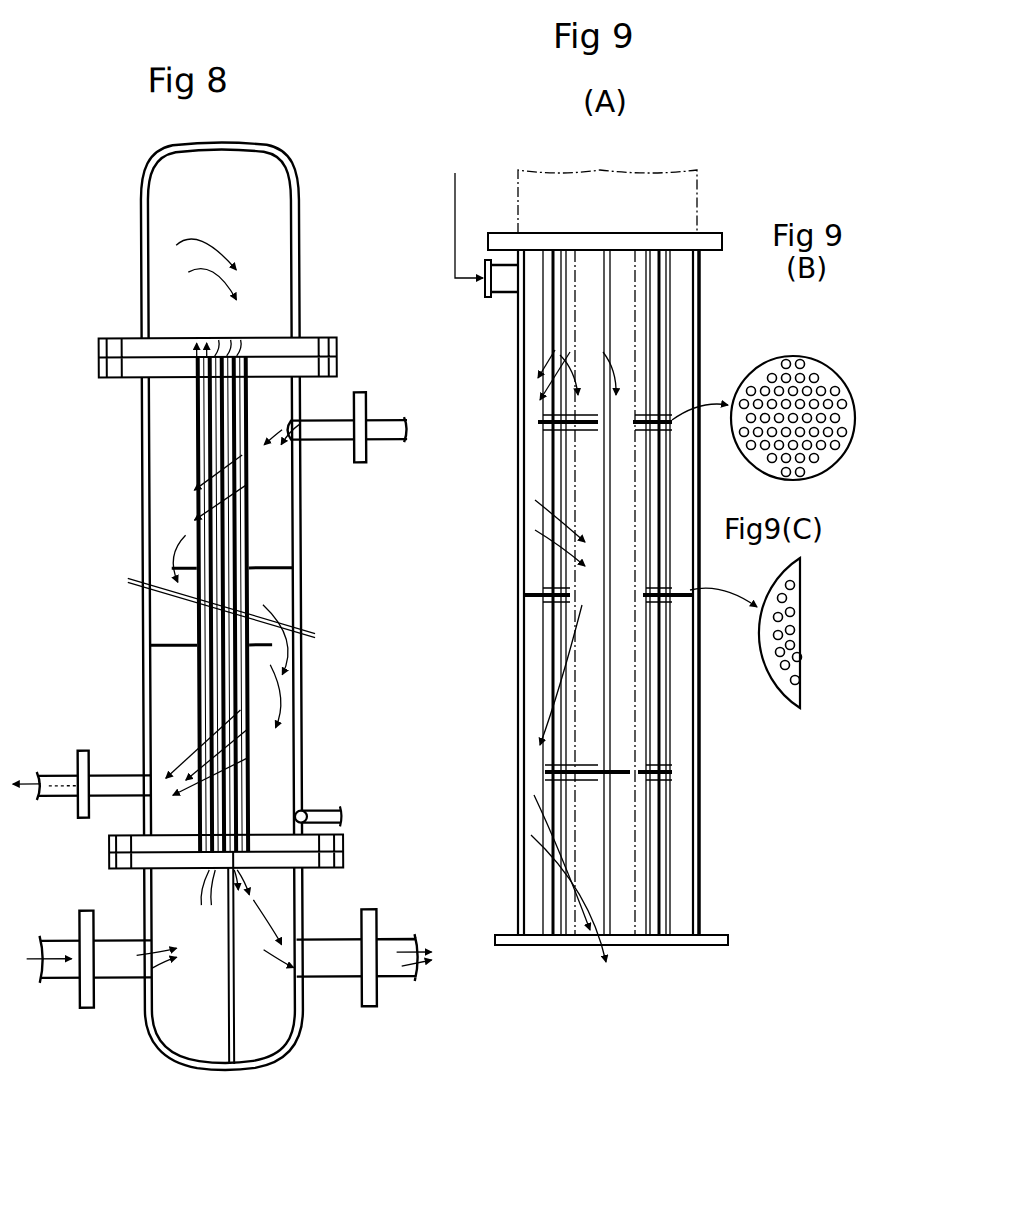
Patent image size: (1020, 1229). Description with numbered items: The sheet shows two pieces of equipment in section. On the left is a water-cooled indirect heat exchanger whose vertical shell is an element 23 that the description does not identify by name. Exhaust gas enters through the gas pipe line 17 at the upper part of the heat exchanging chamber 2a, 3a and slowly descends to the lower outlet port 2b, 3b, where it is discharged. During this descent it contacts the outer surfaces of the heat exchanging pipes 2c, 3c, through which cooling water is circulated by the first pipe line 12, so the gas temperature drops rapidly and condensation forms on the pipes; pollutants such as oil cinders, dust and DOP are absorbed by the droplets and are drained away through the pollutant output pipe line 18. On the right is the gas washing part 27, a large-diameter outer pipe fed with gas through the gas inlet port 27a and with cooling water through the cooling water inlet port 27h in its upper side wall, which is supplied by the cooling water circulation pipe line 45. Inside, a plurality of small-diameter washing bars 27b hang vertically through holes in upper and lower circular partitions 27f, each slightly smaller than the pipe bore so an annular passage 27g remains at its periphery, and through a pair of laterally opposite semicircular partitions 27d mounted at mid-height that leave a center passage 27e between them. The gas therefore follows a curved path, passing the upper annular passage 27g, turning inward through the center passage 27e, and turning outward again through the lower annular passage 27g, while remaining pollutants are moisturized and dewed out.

In FIG. 8, the shell of heat exchanger 23 is at (297, 278).
In FIG. 8, the gas pipe line 17 is at (510, 428).
In FIG. 8, the heat exchanging chamber 2a is at (276, 533).
In FIG. 8, the heat exchanging chamber 3a is at (309, 604).
In FIG. 8, the heat exchanging pipes 2c is at (243, 555).
In FIG. 8, the heat exchanging pipes 3c is at (338, 559).
In FIG. 8, the lower outlet port 2b is at (56, 775).
In FIG. 8, the lower outlet port 3b is at (94, 734).
In FIG. 8, the pollutant output pipe line 18 is at (330, 812).
In FIG. 8, the first pipe line 12 is at (58, 982).
In FIG. 9A, the cooling water circulation pipe line 45 is at (456, 200).
In FIG. 9A, the gas washing part 27 is at (714, 228).
In FIG. 9A, the gas inlet port 27a is at (683, 170).
In FIG. 9A, the small-diameter washing bars 27b is at (663, 350).
In FIG. 9B, the small-diameter washing bars 27b is at (836, 386).
In FIG. 9C, the small-diameter washing bars 27b is at (800, 680).
In FIG. 9A, the semicircular partitions 27d is at (533, 599).
In FIG. 9C, the semicircular partitions 27d is at (778, 692).
In FIG. 9A, the center passage 27e is at (589, 599).
In FIG. 9A, the circular partitions 27f is at (545, 774).
In FIG. 9B, the circular partitions 27f is at (784, 355).
In FIG. 9A, the annular passage 27g is at (530, 420).
In FIG. 9A, the cooling water inlet port 27h is at (465, 285).